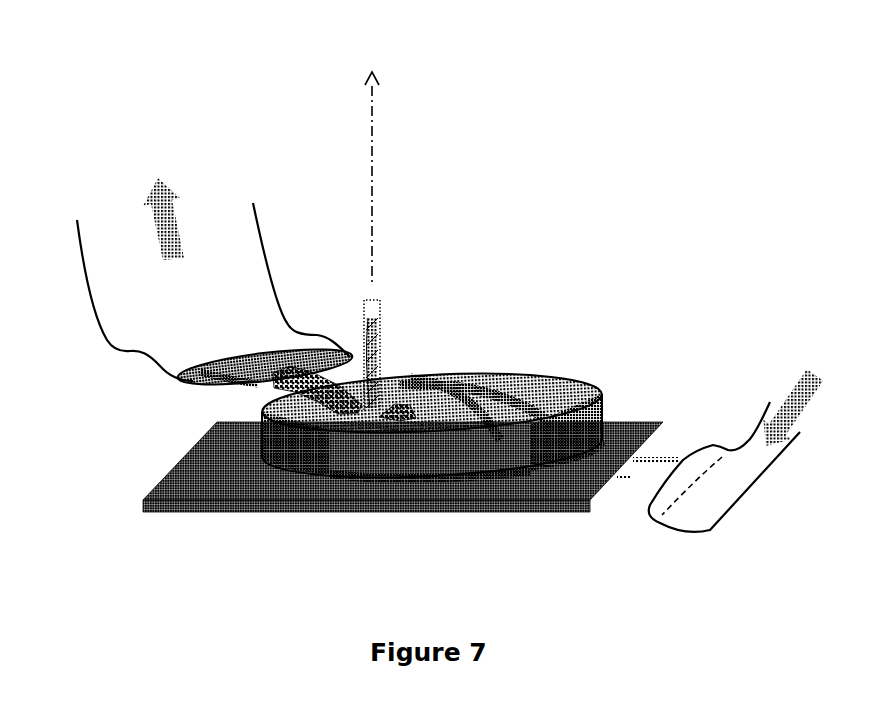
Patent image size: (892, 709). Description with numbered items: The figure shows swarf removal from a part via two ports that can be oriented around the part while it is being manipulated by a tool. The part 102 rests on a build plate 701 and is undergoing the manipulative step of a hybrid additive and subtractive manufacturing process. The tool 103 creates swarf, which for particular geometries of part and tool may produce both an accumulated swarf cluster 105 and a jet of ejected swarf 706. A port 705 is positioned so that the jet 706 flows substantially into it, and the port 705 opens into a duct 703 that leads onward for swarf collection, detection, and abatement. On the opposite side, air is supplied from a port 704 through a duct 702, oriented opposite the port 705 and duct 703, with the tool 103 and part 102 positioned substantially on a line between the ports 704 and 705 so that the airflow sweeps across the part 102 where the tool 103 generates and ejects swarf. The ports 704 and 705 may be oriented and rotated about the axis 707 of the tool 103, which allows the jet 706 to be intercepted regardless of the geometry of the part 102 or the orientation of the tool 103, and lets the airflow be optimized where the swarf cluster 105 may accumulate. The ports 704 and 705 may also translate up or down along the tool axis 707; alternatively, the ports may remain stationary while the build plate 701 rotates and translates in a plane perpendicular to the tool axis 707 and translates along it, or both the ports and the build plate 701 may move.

The part 102 is at (573, 377).
The tool 103 is at (403, 303).
The swarf cluster 105 is at (396, 410).
The build plate 701 is at (152, 488).
The duct 702 is at (745, 443).
The duct 703 is at (90, 302).
The port 704 is at (643, 503).
The port 705 is at (193, 382).
The jet of ejected swarf 706 is at (327, 405).
The tool axis 707 is at (375, 190).